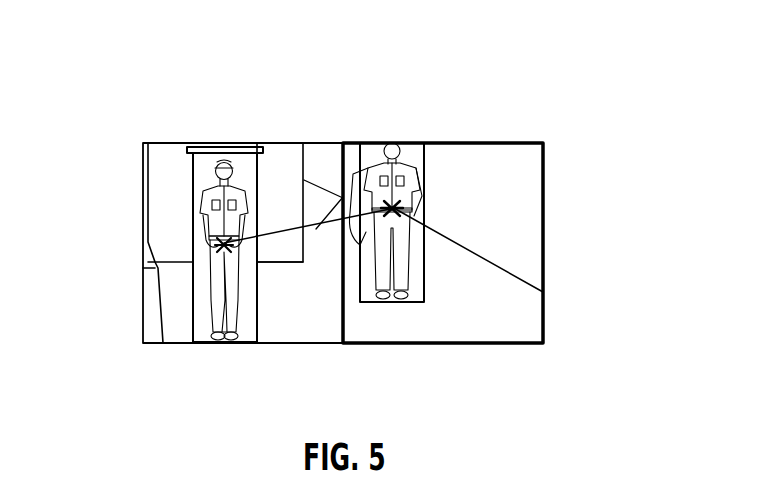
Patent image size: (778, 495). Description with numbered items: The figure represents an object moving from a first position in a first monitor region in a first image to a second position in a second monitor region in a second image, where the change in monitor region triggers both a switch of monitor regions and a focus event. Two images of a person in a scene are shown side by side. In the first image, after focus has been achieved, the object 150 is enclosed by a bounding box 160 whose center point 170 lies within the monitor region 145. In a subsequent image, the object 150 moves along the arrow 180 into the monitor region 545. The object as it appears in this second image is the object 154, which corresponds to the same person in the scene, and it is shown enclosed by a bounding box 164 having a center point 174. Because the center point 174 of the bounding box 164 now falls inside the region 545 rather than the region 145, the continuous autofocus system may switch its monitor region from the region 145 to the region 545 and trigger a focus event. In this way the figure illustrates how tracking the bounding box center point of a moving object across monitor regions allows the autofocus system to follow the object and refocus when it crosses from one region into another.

The monitor region 145 is at (143, 227).
The object 150 is at (203, 342).
The bounding box 160 is at (259, 325).
The center point 170 is at (224, 242).
The arrow 180 is at (293, 226).
The monitor region 545 is at (545, 243).
The bounding box 164 is at (425, 288).
The object 154 is at (385, 301).
The center point 174 is at (393, 207).